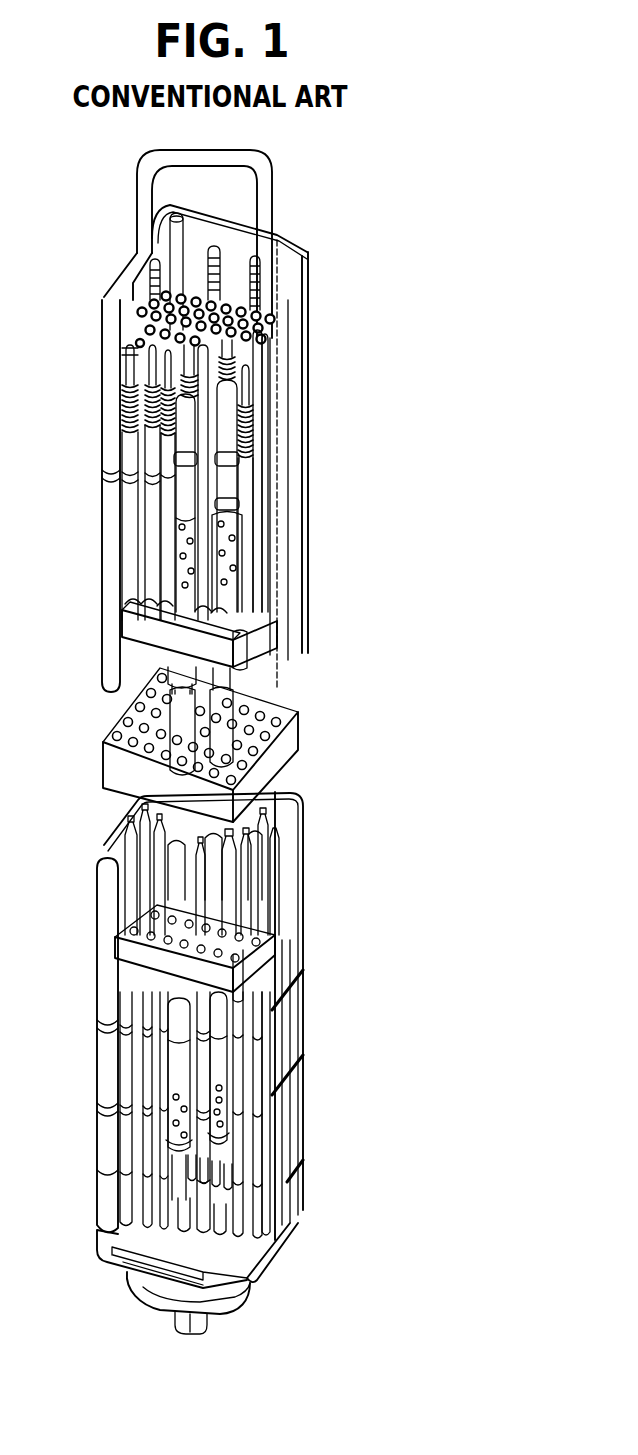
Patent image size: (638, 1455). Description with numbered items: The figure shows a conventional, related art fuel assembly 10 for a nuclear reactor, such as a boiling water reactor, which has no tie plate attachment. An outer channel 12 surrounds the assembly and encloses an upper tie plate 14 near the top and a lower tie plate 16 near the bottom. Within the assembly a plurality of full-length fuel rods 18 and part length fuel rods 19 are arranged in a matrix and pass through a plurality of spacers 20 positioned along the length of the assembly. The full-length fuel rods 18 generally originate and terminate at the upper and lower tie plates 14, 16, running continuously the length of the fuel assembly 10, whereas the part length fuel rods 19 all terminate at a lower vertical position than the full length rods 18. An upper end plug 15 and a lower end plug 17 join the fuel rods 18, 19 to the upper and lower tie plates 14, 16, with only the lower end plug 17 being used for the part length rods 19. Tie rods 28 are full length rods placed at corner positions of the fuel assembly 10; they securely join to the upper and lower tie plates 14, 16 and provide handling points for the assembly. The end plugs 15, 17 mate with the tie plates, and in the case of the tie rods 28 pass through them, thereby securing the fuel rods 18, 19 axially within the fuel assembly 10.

The fuel assembly 10 is at (345, 447).
The outer channel 12 is at (292, 307).
The upper tie plate 14 is at (158, 366).
The upper end plug 15 is at (288, 357).
The lower tie plate 16 is at (233, 1262).
The lower end plug 17 is at (200, 1122).
The full-length fuel rods 18 is at (157, 517).
The part length fuel rods 19 is at (232, 904).
The spacers 20 is at (130, 623).
The tie rods 28 is at (224, 253).